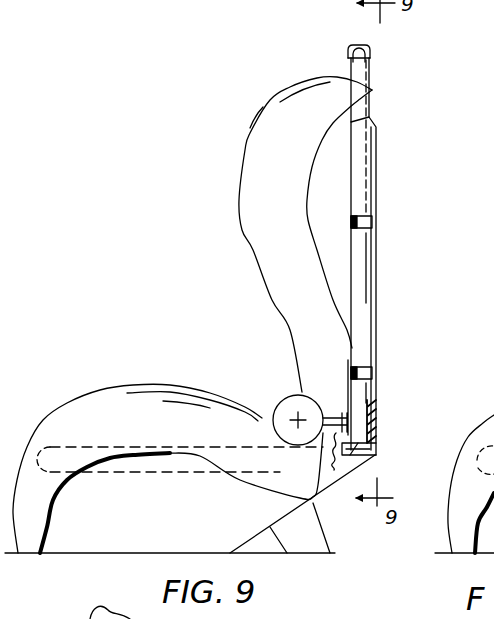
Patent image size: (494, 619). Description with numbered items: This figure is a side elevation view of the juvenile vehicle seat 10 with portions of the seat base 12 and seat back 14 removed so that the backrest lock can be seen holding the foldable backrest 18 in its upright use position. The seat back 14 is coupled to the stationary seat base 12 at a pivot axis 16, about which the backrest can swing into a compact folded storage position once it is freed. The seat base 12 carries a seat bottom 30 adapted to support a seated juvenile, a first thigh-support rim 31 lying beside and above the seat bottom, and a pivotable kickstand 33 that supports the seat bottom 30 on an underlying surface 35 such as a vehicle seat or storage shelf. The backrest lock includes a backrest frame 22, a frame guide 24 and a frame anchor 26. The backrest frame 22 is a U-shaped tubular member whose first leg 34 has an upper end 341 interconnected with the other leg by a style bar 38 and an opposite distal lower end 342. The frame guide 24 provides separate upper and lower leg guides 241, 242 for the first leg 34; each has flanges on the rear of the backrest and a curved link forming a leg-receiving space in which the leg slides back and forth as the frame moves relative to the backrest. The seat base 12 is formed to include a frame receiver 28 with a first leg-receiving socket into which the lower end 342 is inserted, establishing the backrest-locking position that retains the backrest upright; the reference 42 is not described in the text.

The juvenile vehicle seat 10 is at (160, 238).
The seat base 12 is at (68, 407).
The seat back 14 is at (243, 150).
The pivot axis 16 is at (297, 422).
The foldable backrest 18 is at (371, 272).
The backrest frame 22 is at (375, 73).
The frame guide 24 is at (382, 367).
The frame anchor 26 is at (350, 50).
The frame receiver 28 is at (381, 442).
The seat bottom 30 is at (102, 446).
The first thigh-support rim 31 is at (171, 415).
The pivotable kickstand 33 is at (306, 548).
The first leg 34 is at (357, 283).
The underlying surface 35 is at (133, 553).
The style bar 38 is at (350, 63).
The upper end 42 is at (376, 47).
The upper leg guide 241 is at (355, 220).
The lower leg guide 242 is at (355, 370).
The upper end of first leg 341 is at (369, 108).
The lower end of first leg 342 is at (350, 456).